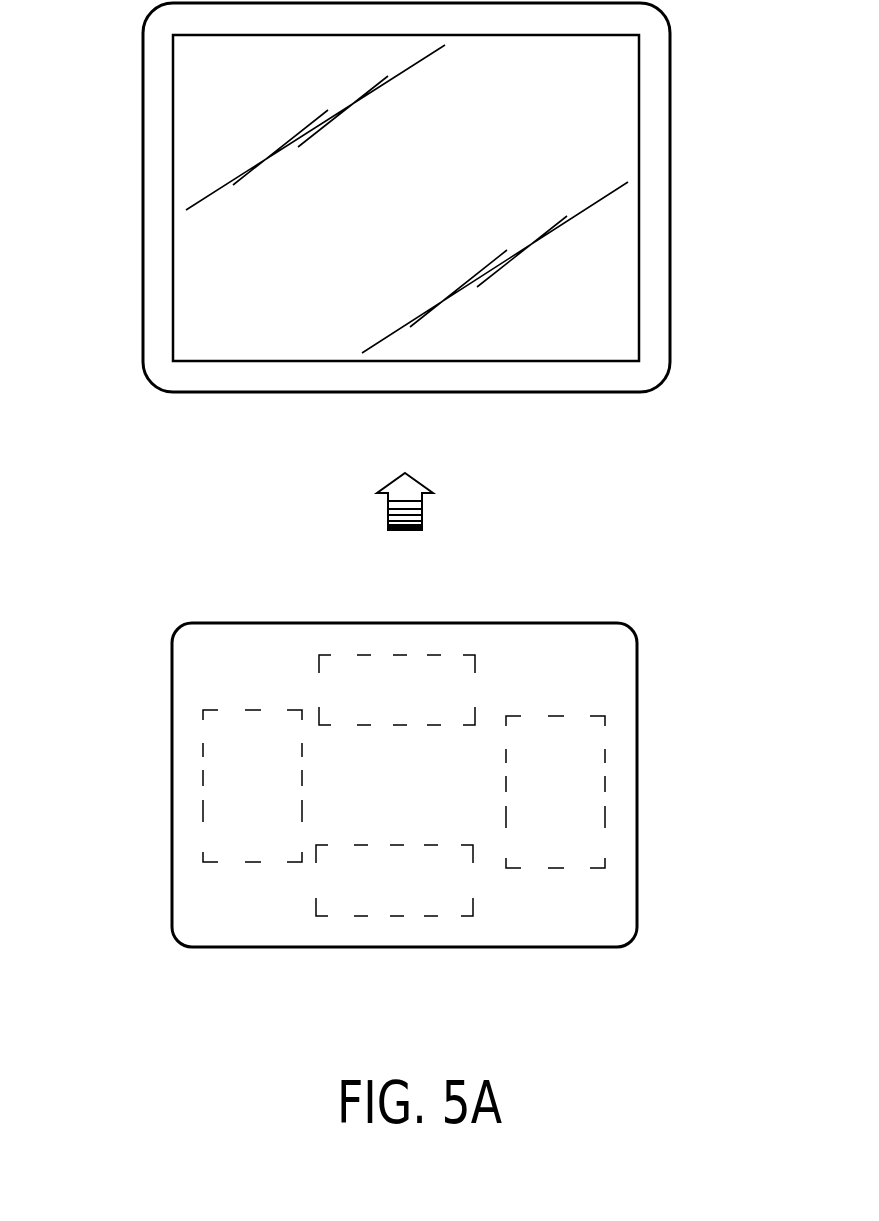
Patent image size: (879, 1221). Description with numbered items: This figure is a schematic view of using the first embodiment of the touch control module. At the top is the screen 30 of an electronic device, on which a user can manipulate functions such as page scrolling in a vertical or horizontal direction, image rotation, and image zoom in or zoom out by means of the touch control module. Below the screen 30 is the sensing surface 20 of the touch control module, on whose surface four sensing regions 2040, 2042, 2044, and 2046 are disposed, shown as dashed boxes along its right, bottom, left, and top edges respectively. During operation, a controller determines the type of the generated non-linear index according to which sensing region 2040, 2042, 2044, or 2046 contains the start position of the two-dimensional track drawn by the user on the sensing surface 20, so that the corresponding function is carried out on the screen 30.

The screen 30 is at (653, 200).
The sensing surface 20 is at (638, 665).
The sensing region 2040 is at (605, 794).
The sensing region 2042 is at (393, 917).
The sensing region 2044 is at (200, 788).
The sensing region 2046 is at (395, 653).